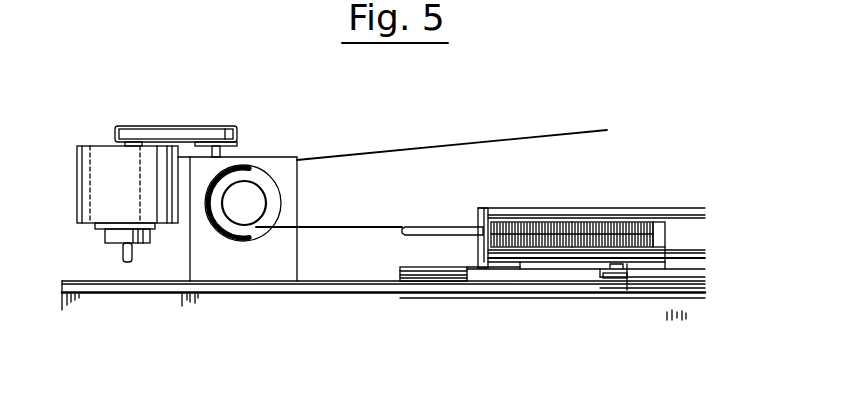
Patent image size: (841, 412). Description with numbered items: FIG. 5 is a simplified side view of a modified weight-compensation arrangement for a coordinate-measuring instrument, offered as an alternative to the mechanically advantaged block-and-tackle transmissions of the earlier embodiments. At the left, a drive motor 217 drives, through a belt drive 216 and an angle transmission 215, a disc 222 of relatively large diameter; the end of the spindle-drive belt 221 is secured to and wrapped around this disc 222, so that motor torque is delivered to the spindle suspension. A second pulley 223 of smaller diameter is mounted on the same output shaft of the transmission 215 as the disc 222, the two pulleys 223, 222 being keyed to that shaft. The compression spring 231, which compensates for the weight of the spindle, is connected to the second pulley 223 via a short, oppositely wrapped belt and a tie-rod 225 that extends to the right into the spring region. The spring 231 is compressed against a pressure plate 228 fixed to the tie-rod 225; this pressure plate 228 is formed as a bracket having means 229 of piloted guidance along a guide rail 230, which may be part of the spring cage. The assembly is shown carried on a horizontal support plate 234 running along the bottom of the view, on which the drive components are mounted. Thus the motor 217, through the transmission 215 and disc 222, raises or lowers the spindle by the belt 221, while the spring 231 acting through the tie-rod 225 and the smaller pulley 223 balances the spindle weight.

The angle transmission 215 is at (293, 258).
The belt drive 216 is at (170, 128).
The drive motor 217 is at (100, 158).
The spindle-drive belt 221 is at (443, 143).
The disc 222 is at (257, 175).
The second pulley 223 is at (240, 251).
The tie-rod 225 is at (432, 227).
The pressure plate 228 is at (667, 220).
The means of piloted guidance 229 is at (623, 281).
The guide rail 230 is at (693, 302).
The compression spring 231 is at (547, 220).
The base plate 234 is at (277, 297).